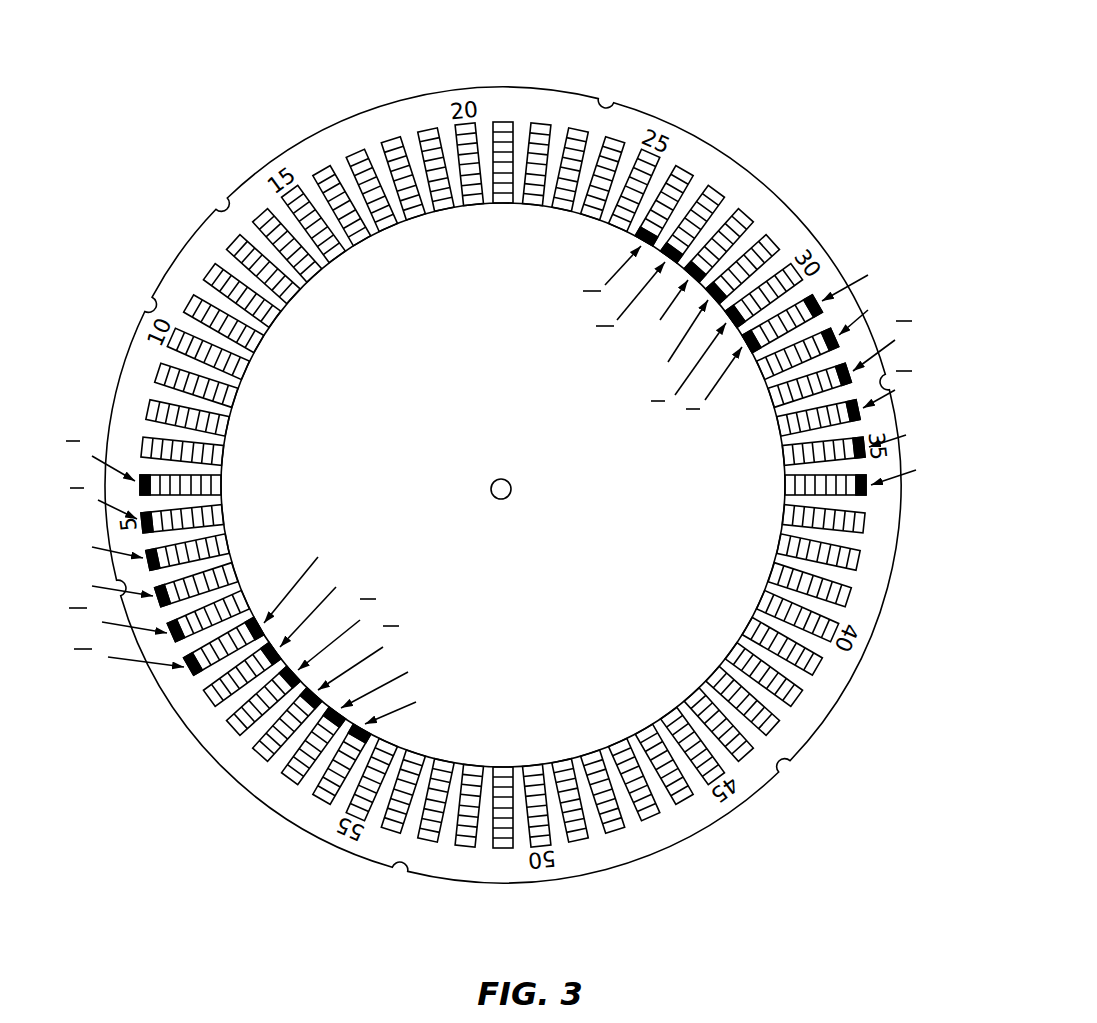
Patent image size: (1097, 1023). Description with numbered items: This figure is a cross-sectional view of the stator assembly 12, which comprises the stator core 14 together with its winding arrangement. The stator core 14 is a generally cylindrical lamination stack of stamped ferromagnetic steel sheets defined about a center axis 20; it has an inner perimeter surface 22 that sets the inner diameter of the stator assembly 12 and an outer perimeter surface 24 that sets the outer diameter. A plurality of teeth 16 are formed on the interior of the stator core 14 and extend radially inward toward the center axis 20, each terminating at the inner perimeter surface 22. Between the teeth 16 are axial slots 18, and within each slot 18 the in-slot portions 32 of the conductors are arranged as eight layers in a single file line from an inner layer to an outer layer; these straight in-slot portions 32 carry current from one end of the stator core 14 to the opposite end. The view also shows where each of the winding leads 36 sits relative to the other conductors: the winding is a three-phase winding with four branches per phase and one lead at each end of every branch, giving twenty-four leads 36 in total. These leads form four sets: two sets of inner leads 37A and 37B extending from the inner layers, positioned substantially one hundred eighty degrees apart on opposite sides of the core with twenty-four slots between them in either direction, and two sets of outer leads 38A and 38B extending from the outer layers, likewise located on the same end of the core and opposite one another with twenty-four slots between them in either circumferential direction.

The stator assembly 12 is at (757, 100).
The stator core 14 is at (330, 135).
The teeth 16 is at (279, 304).
The axial slots 18 is at (365, 246).
The center axis 20 is at (512, 483).
The inner perimeter surface 22 is at (229, 411).
The outer perimeter surface 24 is at (170, 291).
The in-slot portions 32 is at (578, 135).
The winding leads 36 is at (637, 238).
The inner leads 37A is at (331, 518).
The inner leads 37B is at (697, 463).
The outer leads 38A is at (78, 677).
The outer leads 38B is at (914, 481).